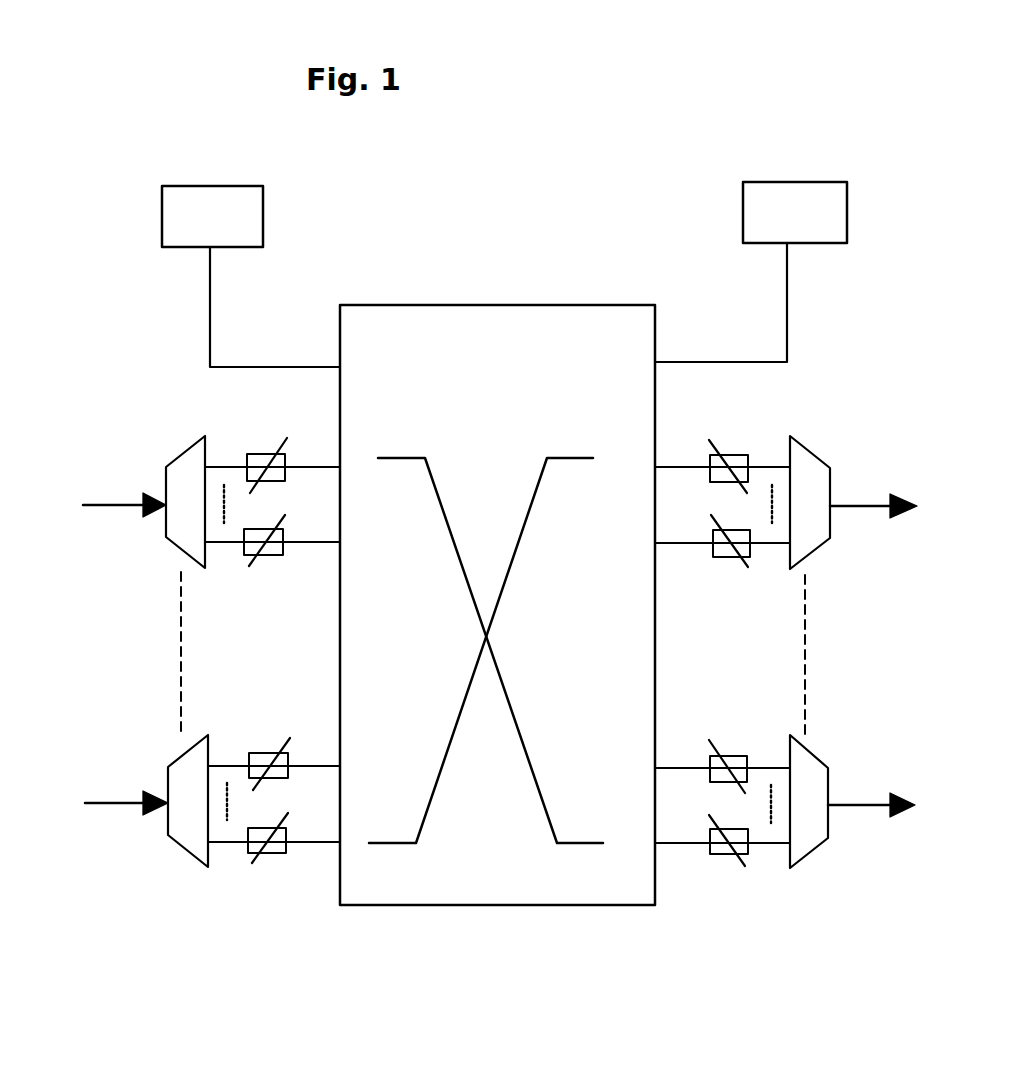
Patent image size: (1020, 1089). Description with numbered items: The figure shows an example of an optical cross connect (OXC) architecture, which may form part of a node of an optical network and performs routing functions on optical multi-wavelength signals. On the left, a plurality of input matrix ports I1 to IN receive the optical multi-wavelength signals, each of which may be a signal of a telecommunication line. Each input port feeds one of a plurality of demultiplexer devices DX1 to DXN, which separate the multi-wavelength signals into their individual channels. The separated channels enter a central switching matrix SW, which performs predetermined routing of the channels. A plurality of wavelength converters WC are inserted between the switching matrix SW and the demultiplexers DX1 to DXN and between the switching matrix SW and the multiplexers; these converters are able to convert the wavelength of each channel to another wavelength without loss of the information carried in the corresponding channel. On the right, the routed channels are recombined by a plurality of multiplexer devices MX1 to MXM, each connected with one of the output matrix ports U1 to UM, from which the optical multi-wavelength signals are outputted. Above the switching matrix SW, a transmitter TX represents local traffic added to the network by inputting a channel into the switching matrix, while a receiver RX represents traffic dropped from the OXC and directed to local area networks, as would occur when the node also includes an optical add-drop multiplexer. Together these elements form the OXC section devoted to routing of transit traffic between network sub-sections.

The switching matrix SW is at (492, 347).
The transmitter TX is at (221, 222).
The receiver RX is at (798, 223).
The demultiplexer device DX1 is at (182, 485).
The demultiplexer device DXN is at (190, 828).
The input matrix port I1 is at (105, 505).
The input matrix port IN is at (113, 803).
The wavelength converters WC is at (283, 780).
The multiplexer device MX1 is at (801, 587).
The multiplexer device MXM is at (768, 834).
The output matrix port U1 is at (865, 506).
The output matrix port UM is at (875, 805).